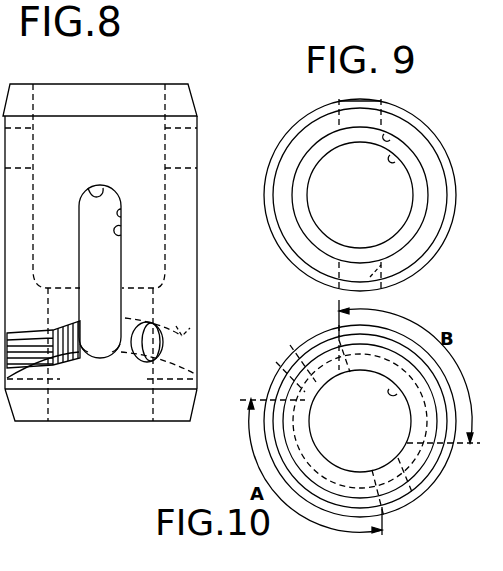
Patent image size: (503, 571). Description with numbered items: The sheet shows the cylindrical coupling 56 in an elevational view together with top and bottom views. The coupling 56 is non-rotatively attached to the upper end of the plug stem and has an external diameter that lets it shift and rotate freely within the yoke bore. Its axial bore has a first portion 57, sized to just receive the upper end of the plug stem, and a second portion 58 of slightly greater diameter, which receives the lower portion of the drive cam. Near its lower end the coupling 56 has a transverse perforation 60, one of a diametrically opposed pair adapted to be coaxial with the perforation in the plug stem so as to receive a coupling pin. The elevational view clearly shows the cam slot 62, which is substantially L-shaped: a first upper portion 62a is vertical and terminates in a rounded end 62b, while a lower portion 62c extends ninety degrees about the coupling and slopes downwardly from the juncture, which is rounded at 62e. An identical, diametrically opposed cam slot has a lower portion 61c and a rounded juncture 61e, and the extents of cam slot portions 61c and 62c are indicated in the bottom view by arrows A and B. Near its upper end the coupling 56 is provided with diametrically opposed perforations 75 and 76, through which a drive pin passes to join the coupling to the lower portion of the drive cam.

In FIG. 8, the coupling 56 is at (60, 84).
In FIG. 9, the coupling 56 is at (437, 150).
In FIG. 10, the coupling 56 is at (387, 513).
In FIG. 8, the first portion of axial bore 57 is at (55, 408).
In FIG. 9, the first portion of axial bore 57 is at (400, 158).
In FIG. 10, the first portion of axial bore 57 is at (395, 393).
In FIG. 8, the second portion of axial bore 58 is at (167, 100).
In FIG. 9, the second portion of axial bore 58 is at (389, 136).
In FIG. 10, the second portion of axial bore 58 is at (388, 357).
In FIG. 8, the transverse perforation 60 is at (163, 343).
In FIG. 8, the lower cam slot portion 61c is at (185, 328).
In FIG. 8, the rounded juncture 61e is at (95, 360).
In FIG. 8, the cam slot 62 is at (121, 212).
In FIG. 8, the first upper portion of cam slot 62a is at (118, 232).
In FIG. 8, the rounded end 62b is at (98, 190).
In FIG. 8, the lower portion of cam slot 62c is at (30, 333).
In FIG. 8, the rounded juncture 62e is at (106, 358).
In FIG. 9, the perforation 75 is at (372, 290).
In FIG. 8, the perforation 76 is at (182, 150).
In FIG. 9, the perforation 76 is at (345, 100).